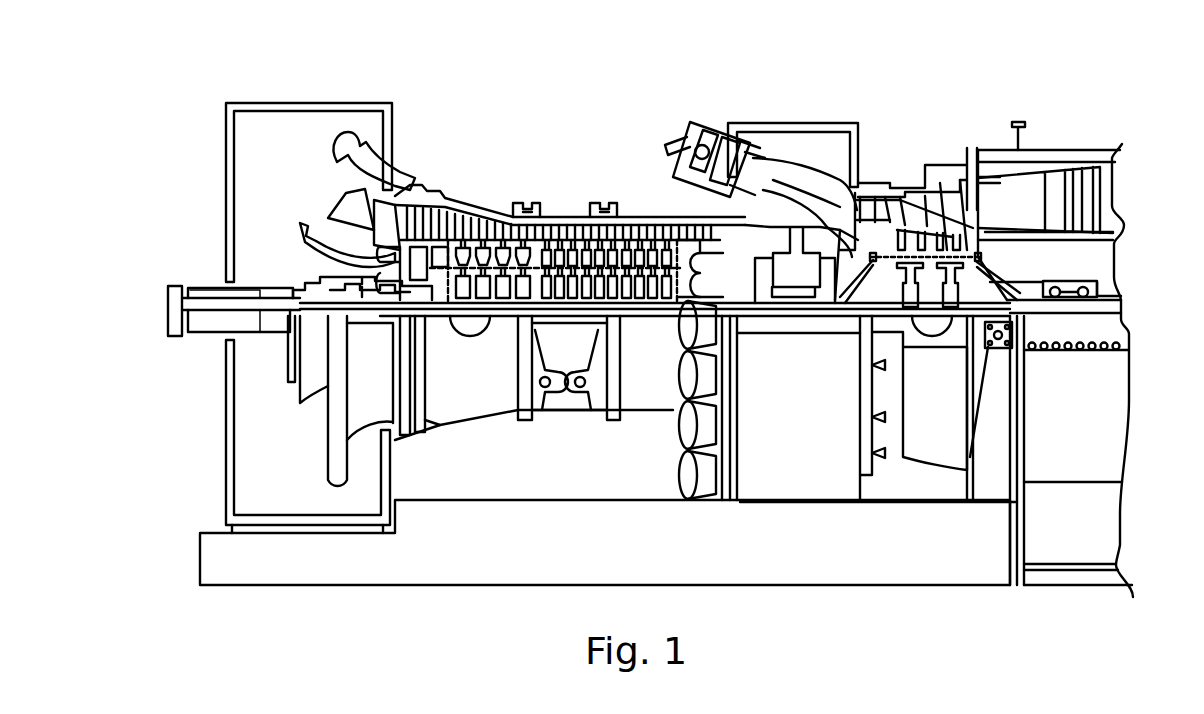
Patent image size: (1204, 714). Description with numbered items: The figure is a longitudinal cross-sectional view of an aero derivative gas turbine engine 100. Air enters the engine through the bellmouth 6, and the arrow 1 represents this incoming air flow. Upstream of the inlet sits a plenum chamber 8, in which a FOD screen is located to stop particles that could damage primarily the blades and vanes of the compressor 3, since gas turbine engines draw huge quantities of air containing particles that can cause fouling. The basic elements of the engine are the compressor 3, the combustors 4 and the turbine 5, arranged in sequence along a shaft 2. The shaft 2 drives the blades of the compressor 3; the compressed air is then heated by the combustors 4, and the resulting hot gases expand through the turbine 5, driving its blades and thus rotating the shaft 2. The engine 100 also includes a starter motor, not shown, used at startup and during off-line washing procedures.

The aero derivative gas turbine engine 100 is at (665, 308).
The air flow 1 is at (317, 196).
The shaft 2 is at (230, 292).
The compressor 3 is at (687, 217).
The combustors 4 is at (667, 120).
The turbine 5 is at (980, 145).
The bellmouth 6 is at (365, 192).
The plenum chamber 8 is at (305, 127).